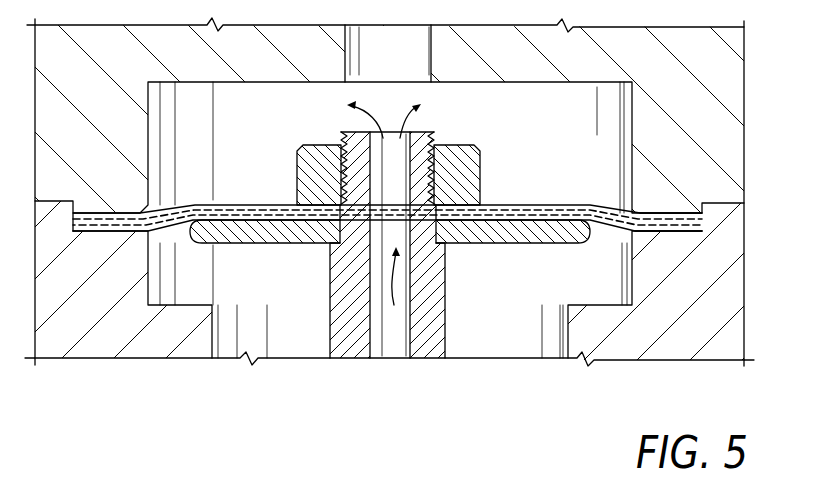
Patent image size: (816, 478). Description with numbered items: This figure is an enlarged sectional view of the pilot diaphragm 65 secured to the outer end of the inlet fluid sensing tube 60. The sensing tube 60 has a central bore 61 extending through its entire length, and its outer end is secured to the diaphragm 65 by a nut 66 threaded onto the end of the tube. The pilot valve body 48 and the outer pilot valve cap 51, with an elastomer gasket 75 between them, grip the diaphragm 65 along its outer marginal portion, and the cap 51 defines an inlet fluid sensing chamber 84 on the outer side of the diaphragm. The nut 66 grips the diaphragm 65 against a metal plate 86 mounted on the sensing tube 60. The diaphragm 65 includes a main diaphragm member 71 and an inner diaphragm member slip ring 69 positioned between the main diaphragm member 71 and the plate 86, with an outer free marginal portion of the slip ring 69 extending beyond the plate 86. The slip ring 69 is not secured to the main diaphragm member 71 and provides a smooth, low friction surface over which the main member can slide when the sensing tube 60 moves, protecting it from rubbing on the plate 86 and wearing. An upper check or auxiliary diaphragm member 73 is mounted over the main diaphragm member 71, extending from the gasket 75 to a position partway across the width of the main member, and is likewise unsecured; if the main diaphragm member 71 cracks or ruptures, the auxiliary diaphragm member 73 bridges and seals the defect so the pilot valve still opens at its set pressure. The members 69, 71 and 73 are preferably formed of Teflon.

The pilot valve body 48 is at (727, 303).
The outer pilot valve cap 51 is at (734, 96).
The inlet fluid sensing tube 60 is at (451, 274).
The central bore 61 is at (407, 340).
The pilot diaphragm 65 is at (431, 182).
The nut 66 is at (478, 152).
The inner diaphragm member slip ring 69 is at (541, 244).
The main diaphragm member 71 is at (500, 210).
The auxiliary diaphragm member 73 is at (620, 212).
The elastomer gasket 75 is at (672, 221).
The inlet fluid sensing chamber 84 is at (257, 156).
The metal plate 86 is at (283, 244).